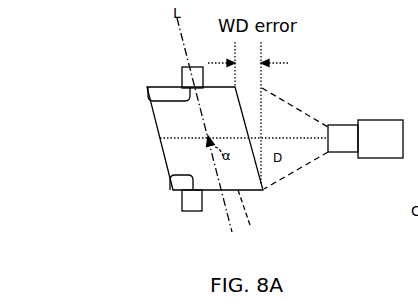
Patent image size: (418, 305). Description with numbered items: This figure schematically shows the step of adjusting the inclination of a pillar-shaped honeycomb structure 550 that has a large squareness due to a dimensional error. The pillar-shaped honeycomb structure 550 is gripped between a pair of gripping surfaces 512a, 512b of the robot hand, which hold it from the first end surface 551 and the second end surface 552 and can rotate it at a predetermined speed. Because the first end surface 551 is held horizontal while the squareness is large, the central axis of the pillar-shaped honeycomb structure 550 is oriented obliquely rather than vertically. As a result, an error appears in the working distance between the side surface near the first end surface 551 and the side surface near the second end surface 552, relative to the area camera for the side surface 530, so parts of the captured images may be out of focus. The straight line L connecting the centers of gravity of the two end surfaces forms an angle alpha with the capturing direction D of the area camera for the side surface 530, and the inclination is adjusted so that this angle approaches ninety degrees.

The pillar-shaped honeycomb structure 550 is at (160, 137).
The first end surface 551 is at (157, 84).
The gripping surface 512a is at (148, 96).
The gripping surface 512b is at (170, 175).
The second end surface 552 is at (262, 221).
The area camera for the side surface 530 is at (380, 120).